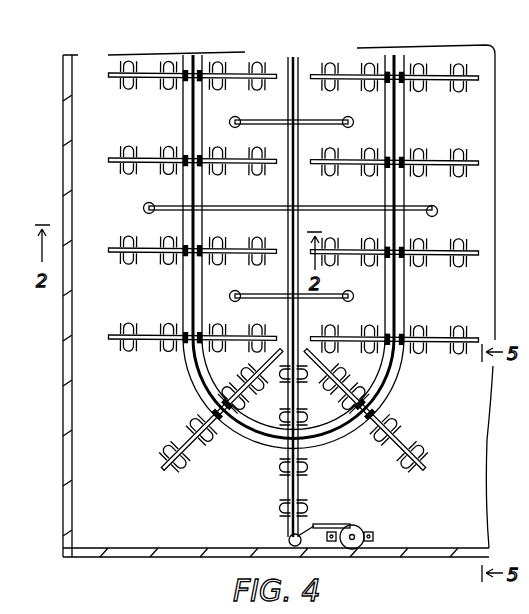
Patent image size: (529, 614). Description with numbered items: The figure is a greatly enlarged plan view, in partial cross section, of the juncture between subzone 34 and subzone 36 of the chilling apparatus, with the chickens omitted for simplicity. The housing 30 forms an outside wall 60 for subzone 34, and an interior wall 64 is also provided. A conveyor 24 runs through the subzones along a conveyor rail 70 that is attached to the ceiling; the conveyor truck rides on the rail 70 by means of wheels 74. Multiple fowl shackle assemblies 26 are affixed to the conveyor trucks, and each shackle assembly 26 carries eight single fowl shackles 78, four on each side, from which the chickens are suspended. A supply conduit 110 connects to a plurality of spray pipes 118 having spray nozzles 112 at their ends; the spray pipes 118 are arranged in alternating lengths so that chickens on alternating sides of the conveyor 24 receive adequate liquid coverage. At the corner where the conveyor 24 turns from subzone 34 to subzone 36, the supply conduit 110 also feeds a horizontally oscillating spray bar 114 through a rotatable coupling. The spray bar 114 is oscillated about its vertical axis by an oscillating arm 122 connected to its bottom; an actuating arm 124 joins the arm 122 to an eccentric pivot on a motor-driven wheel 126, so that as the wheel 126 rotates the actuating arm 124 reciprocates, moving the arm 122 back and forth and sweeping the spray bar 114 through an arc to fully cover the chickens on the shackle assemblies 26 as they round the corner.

The conveyor 24 is at (160, 196).
The multiple fowl shackle assembly 26 is at (283, 264).
The housing 30 is at (248, 301).
The subzone 34 is at (90, 157).
The subzone 36 is at (455, 200).
The outside wall 60 is at (62, 355).
The interior wall 64 is at (288, 62).
The conveyor rail 70 is at (187, 130).
The wheels 74 is at (190, 168).
The single fowl shackle 78 is at (135, 322).
The supply conduit 110 is at (300, 60).
The spray nozzle 112 is at (265, 135).
The oscillating spray bar 114 is at (289, 539).
The spray pipe 118 is at (291, 208).
The oscillating arm 122 is at (304, 532).
The actuating arm 124 is at (340, 523).
The wheel 126 is at (365, 533).